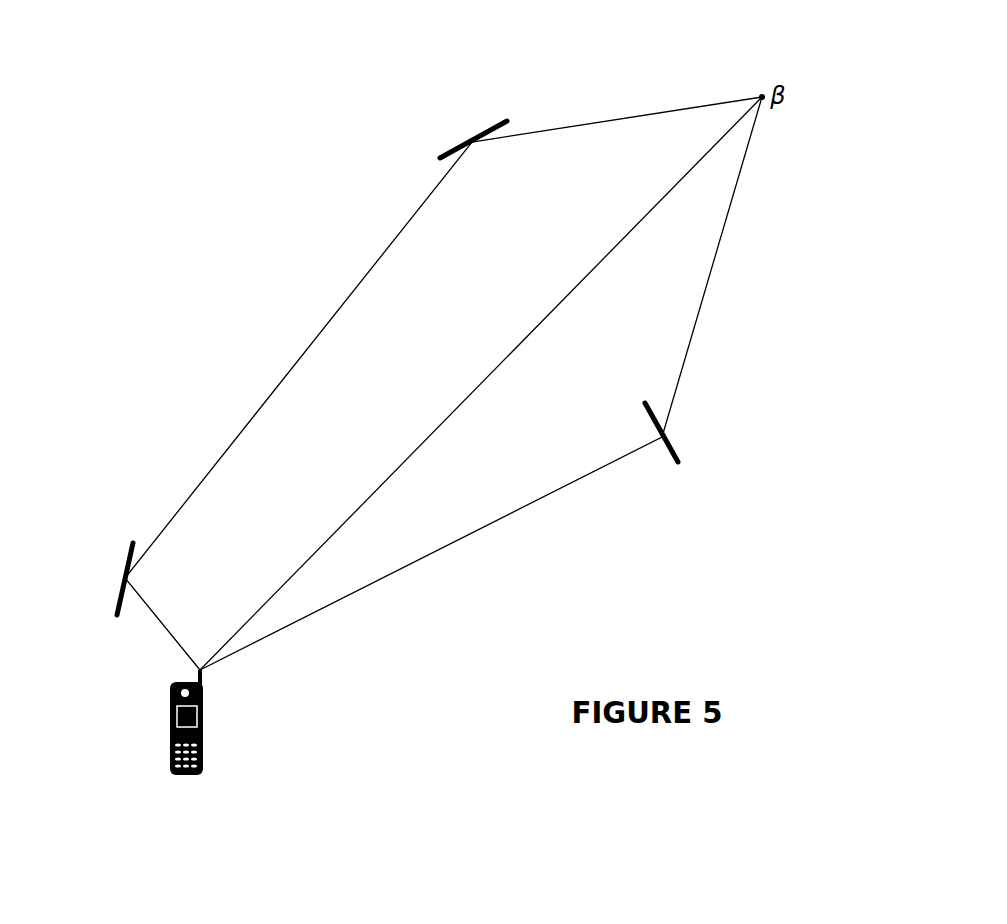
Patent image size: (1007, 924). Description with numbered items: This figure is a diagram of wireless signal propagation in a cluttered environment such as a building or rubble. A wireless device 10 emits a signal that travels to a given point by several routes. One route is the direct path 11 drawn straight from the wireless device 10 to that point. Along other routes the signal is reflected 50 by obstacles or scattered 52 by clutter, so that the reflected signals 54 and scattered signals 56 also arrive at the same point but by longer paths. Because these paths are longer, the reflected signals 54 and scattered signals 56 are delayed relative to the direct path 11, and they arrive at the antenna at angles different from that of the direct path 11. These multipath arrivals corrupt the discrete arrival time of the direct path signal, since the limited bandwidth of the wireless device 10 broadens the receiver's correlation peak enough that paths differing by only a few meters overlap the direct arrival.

The wireless device 10 is at (183, 748).
The direct path 11 is at (481, 383).
The reflection 50 is at (266, 353).
The scattering 52 is at (656, 453).
The reflected signal 54 is at (443, 346).
The scattered signal 56 is at (544, 383).